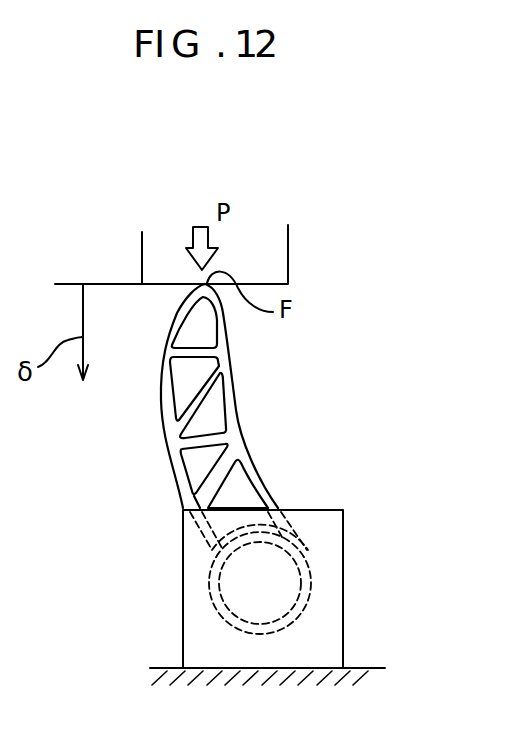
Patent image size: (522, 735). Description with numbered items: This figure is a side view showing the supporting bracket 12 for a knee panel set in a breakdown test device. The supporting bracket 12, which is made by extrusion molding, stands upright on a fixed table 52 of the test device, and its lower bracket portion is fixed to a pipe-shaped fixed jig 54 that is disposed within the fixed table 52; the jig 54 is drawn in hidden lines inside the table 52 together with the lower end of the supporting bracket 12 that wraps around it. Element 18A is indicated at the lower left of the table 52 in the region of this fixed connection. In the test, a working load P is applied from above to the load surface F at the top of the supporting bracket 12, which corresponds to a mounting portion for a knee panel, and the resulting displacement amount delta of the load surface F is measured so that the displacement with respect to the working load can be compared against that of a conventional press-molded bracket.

The supporting bracket 12 is at (243, 420).
The fixed table 52 is at (333, 592).
The pipe-shaped fixed jig 54 is at (305, 570).
The shaft 18A is at (207, 577).